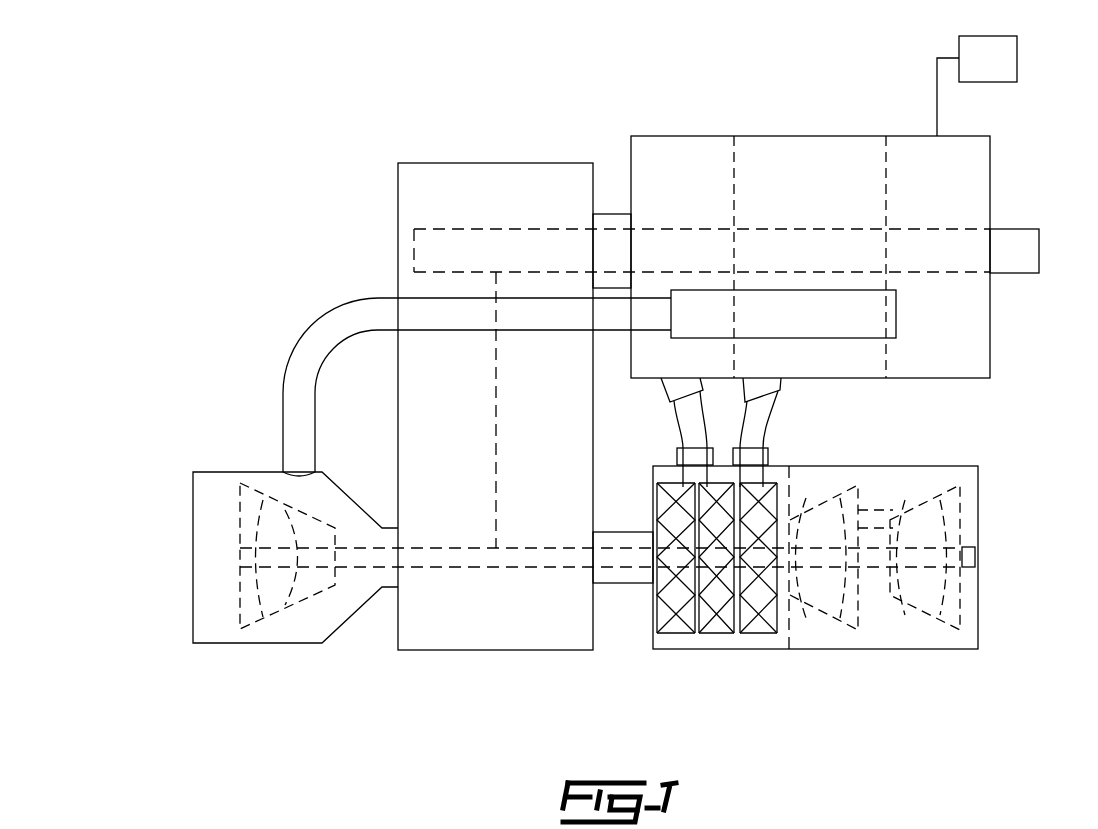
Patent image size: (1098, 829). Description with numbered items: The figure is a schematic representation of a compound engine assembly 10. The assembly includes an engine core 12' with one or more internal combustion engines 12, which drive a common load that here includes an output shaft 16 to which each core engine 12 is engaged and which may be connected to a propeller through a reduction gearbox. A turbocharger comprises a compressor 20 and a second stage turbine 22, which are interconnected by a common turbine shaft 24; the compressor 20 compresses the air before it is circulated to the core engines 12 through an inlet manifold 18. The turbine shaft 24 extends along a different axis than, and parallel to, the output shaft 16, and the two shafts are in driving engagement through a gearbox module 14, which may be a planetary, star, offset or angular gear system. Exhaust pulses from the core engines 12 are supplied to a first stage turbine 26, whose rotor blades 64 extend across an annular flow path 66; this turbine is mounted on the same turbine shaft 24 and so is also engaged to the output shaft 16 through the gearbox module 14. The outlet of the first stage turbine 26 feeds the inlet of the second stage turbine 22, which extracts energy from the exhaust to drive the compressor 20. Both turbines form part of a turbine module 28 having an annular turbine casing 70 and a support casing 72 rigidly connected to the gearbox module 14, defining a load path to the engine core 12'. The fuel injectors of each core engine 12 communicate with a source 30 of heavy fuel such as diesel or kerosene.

The compound engine assembly 10 is at (218, 248).
The internal combustion engine 12 is at (810, 196).
The engine core 12' is at (648, 208).
The gearbox module 14 is at (449, 617).
The output shaft 16 is at (1010, 245).
The inlet manifold 18 is at (800, 312).
The compressor 20 is at (262, 648).
The second stage turbine 22 is at (925, 636).
The turbine shaft 24 is at (541, 555).
The first stage turbine 26 is at (822, 627).
The turbine module 28 is at (951, 465).
The source of heavy fuel 30 is at (1000, 56).
The rotor blades 64 is at (848, 598).
The annular flow path 66 is at (803, 620).
The turbine casing 70 is at (864, 466).
The support casing 72 is at (710, 640).